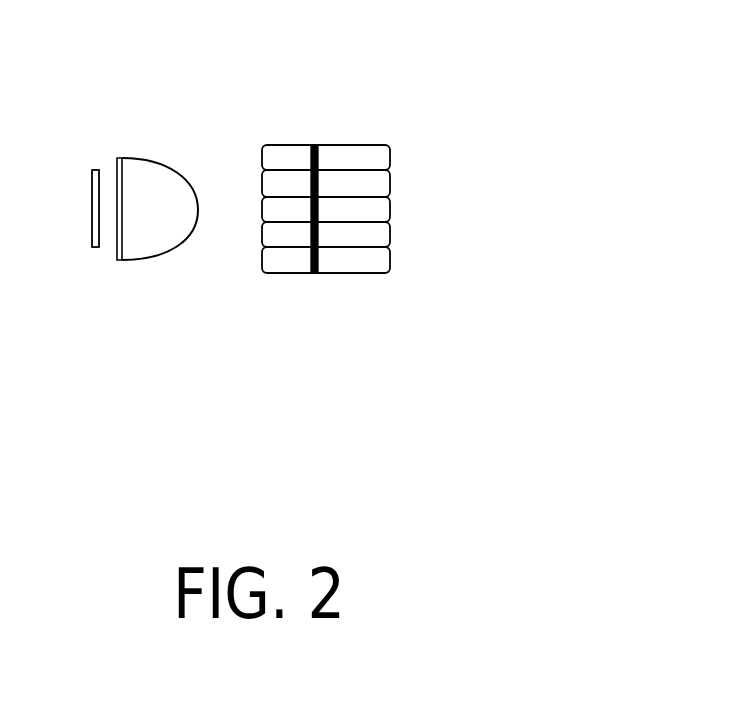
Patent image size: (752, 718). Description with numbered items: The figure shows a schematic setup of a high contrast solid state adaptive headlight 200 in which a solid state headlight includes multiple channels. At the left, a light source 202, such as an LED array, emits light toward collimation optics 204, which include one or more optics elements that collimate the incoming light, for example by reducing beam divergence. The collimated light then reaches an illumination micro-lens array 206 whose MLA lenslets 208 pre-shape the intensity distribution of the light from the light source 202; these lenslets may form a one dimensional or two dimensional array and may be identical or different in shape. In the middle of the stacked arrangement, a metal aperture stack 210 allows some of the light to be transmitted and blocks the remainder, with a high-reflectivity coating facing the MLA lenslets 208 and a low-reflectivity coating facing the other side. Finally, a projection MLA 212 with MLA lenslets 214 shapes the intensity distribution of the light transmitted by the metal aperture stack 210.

The high contrast solid state adaptive headlight 200 is at (531, 47).
The light source 202 is at (101, 210).
The collimation optics 204 is at (164, 180).
The illumination micro-lens array 206 is at (289, 133).
The MLA lenslets 208 is at (262, 207).
The metal aperture stack 210 is at (318, 132).
The projection MLA 212 is at (360, 133).
The MLA lenslets 214 is at (390, 207).